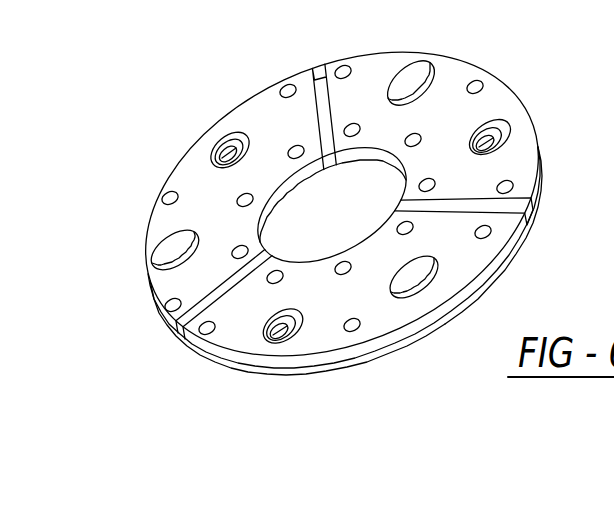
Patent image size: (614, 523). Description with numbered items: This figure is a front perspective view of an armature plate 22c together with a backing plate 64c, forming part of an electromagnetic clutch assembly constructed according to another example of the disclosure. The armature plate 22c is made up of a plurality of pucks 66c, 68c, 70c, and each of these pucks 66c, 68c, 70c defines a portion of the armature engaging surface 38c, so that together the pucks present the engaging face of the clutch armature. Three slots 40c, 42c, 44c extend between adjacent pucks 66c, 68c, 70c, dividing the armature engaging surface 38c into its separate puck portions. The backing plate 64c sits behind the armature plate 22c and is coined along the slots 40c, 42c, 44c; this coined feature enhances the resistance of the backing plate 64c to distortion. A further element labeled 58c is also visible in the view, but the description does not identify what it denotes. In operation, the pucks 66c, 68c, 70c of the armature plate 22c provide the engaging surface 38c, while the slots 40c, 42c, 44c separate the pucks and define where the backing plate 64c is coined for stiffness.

The armature plate 22c is at (182, 126).
The armature engaging surface 38c is at (158, 216).
The slot 40c is at (312, 67).
The slot 42c is at (415, 206).
The slot 44c is at (182, 340).
The slot 58c is at (601, 0).
The backing plate 64c is at (443, 312).
The puck 66c is at (497, 93).
The puck 68c is at (457, 260).
The puck 70c is at (268, 116).